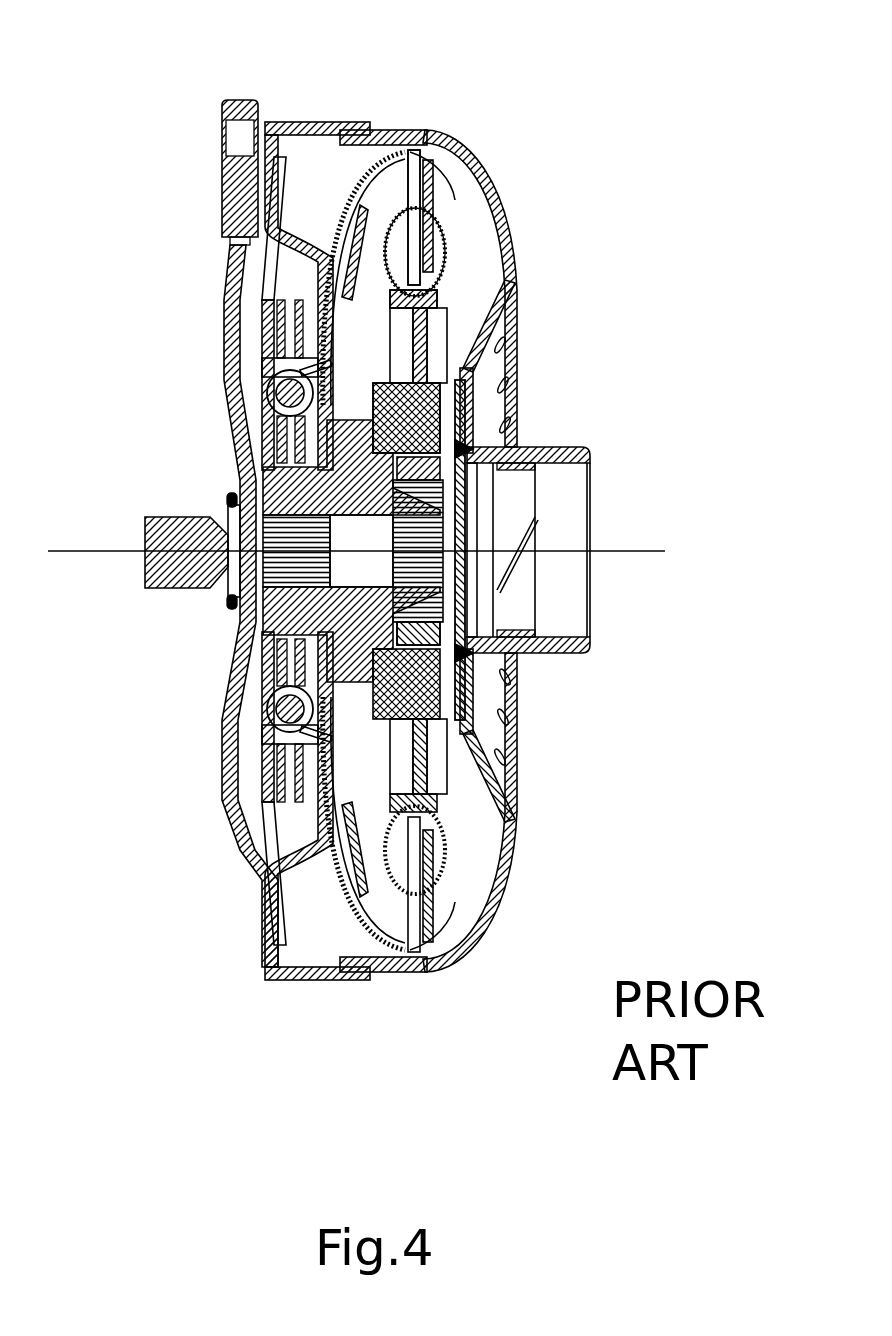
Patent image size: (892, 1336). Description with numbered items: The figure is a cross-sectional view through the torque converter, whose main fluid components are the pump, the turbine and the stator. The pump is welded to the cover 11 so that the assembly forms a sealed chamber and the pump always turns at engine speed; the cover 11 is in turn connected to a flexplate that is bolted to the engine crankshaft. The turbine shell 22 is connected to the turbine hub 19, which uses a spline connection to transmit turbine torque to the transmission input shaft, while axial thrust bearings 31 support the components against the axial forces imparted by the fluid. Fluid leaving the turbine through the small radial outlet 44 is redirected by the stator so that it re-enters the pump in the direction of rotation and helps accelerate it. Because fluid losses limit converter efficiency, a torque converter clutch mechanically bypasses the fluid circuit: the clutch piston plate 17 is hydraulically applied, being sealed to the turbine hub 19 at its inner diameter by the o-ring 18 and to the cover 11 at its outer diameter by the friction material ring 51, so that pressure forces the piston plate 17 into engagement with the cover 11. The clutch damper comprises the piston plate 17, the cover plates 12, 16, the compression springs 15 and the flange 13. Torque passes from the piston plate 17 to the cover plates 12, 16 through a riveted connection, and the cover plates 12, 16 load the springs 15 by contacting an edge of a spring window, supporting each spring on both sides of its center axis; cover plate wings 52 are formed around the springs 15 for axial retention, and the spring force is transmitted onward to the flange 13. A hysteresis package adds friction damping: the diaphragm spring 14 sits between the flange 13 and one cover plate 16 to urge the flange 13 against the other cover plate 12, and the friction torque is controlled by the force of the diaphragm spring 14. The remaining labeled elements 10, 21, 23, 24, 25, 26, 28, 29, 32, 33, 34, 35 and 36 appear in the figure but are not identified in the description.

The clutch assembly 10 is at (522, 158).
The cover 11 is at (225, 298).
The cover plate 12 is at (270, 333).
The flange 13 is at (280, 783).
The diaphragm spring 14 is at (275, 447).
The compression springs 15 is at (265, 708).
The cover plate 16 is at (283, 340).
The piston plate 17 is at (290, 243).
The o-ring 18 is at (278, 596).
The turbine hub 19 is at (293, 598).
The lower pressure ring 21 is at (462, 715).
The turbine shell 22 is at (280, 123).
The diaphragm spring 23 is at (345, 190).
The release lever 24 is at (403, 215).
The lever pivot 25 is at (440, 340).
The lower retaining wedge 26 is at (475, 678).
The hub sleeve lower wall 28 is at (470, 630).
The upper retaining wedge 29 is at (472, 430).
The axial thrust bearings 31 is at (462, 395).
The return spring 32 is at (445, 175).
The housing chamber 33 is at (467, 223).
The housing wall 34 is at (480, 170).
The support plate 35 is at (500, 440).
The hub sleeve 36 is at (517, 497).
The small radial outlet 44 is at (395, 770).
The friction material ring 51 is at (262, 917).
The cover plate wings 52 is at (273, 777).